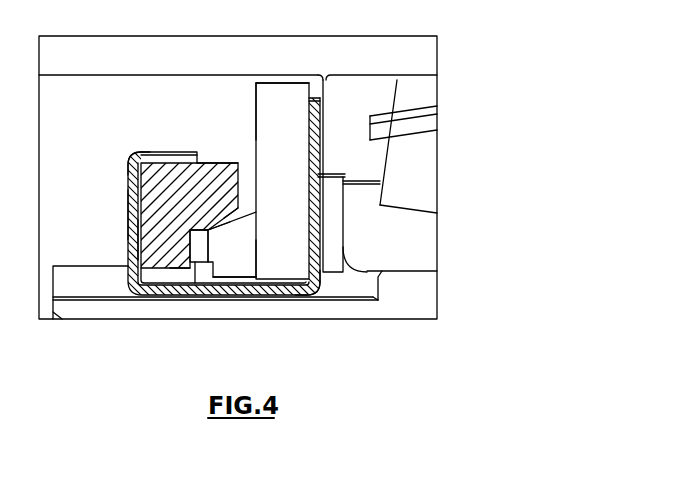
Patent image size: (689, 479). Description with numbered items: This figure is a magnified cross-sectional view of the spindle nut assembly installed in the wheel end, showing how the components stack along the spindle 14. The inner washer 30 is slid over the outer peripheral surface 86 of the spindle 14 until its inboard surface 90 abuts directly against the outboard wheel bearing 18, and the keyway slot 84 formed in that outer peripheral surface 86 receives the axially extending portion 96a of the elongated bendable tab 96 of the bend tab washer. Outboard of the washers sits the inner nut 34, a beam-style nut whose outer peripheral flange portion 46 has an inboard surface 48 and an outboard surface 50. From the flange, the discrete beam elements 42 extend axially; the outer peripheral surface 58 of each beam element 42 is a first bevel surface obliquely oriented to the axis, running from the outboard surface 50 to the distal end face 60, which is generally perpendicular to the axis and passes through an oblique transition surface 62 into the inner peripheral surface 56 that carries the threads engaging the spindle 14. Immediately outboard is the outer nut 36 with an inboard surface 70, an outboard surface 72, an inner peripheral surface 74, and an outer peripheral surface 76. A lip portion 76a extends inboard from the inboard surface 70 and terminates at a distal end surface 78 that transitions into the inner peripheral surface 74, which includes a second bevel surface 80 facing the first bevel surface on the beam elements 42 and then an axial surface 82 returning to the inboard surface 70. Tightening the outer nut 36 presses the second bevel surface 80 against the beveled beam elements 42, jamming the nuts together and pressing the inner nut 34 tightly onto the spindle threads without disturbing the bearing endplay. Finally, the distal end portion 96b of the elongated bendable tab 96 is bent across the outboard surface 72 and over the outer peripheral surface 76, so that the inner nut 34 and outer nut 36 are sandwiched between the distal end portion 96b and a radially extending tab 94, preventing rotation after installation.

The outer peripheral flange portion 46 is at (278, 132).
The inboard surface 48 is at (327, 140).
The outboard surface 50 is at (252, 130).
The tabs 94 is at (313, 143).
The distal end portion 96b is at (158, 160).
The outer peripheral surface 76 is at (205, 160).
The lip portion 76a is at (223, 180).
The inner nut 34 is at (292, 162).
The inner washer 30 is at (326, 195).
The outboard wheel bearing 18 is at (392, 228).
The outer nut 36 is at (181, 198).
The axial surface 82 is at (129, 211).
The distal end face 60 is at (203, 230).
The distal end surface 78 is at (226, 223).
The outer peripheral surface 58 is at (220, 230).
The outboard surface 72 is at (128, 246).
The outer peripheral surface 86 is at (80, 265).
The beam elements 42 is at (244, 253).
The transition surface 62 is at (232, 266).
The second bevel surface 80 is at (222, 236).
The inner peripheral surface 56 is at (248, 280).
The spindle 14 is at (400, 287).
The keyway slot 84 is at (80, 290).
The inner peripheral surface 74 is at (170, 268).
The inboard surface 70 is at (195, 262).
The elongated bendable tab 96 is at (259, 298).
The axially extending portion 96a is at (282, 288).
The inboard surface 90 is at (353, 282).